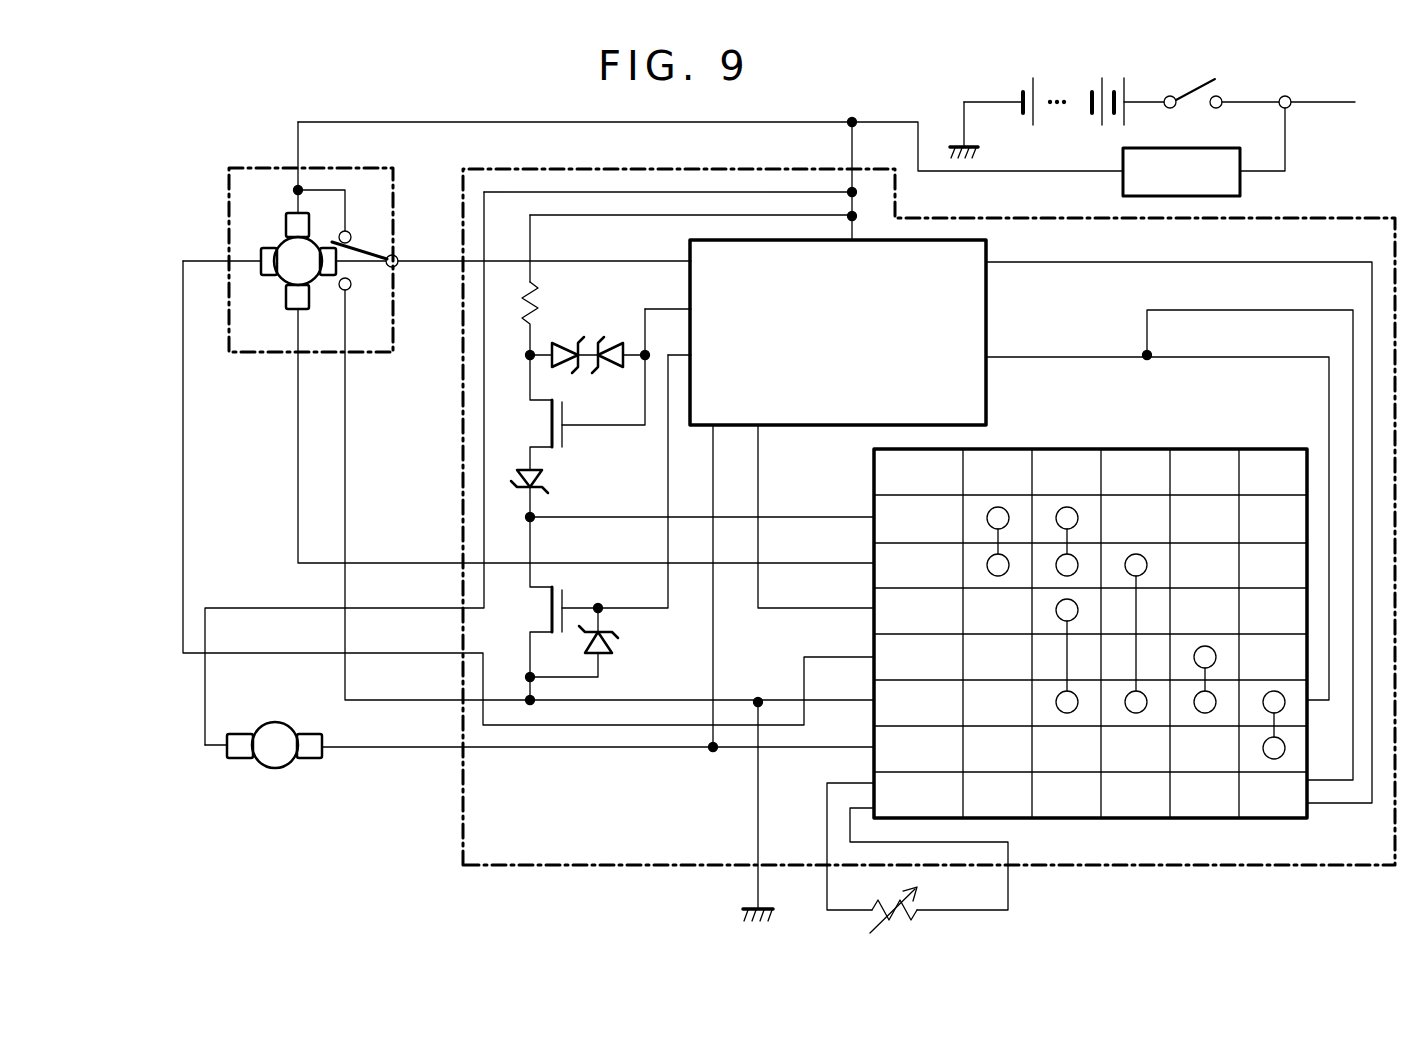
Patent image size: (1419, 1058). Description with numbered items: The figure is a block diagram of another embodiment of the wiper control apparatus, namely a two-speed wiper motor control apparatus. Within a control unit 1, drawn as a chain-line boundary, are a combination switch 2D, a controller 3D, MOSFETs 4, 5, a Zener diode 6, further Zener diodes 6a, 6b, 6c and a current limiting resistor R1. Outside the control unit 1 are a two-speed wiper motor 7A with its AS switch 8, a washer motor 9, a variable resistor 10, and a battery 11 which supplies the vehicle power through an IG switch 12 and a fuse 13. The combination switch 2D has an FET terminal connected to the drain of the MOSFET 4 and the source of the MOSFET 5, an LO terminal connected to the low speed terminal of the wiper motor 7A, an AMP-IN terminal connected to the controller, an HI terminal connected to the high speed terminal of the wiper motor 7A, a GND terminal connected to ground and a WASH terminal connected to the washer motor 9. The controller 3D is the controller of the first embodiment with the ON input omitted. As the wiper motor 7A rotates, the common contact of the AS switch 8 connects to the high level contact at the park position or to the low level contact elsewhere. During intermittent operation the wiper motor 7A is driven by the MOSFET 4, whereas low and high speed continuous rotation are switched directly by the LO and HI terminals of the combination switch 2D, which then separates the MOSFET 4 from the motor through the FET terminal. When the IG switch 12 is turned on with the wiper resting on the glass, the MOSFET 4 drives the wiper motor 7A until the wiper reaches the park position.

The control unit 1 is at (1332, 217).
The combination switch 2D is at (1217, 449).
The controller 3D is at (988, 292).
The MOSFET 4 is at (542, 612).
The MOSFET 5 is at (542, 425).
The Zener diode 6 is at (545, 480).
The Zener diode 6a is at (563, 345).
The Zener diode 6b is at (606, 368).
The Zener diode 6c is at (617, 625).
The two-speed wiper motor 7A is at (280, 278).
The AS switch 8 is at (353, 268).
The washer motor 9 is at (270, 722).
The variable resistor 10 is at (920, 900).
The battery 11 is at (1088, 78).
The IG switch 12 is at (1220, 92).
The fuse 13 is at (1197, 148).
The current limiting resistor R1 is at (537, 313).